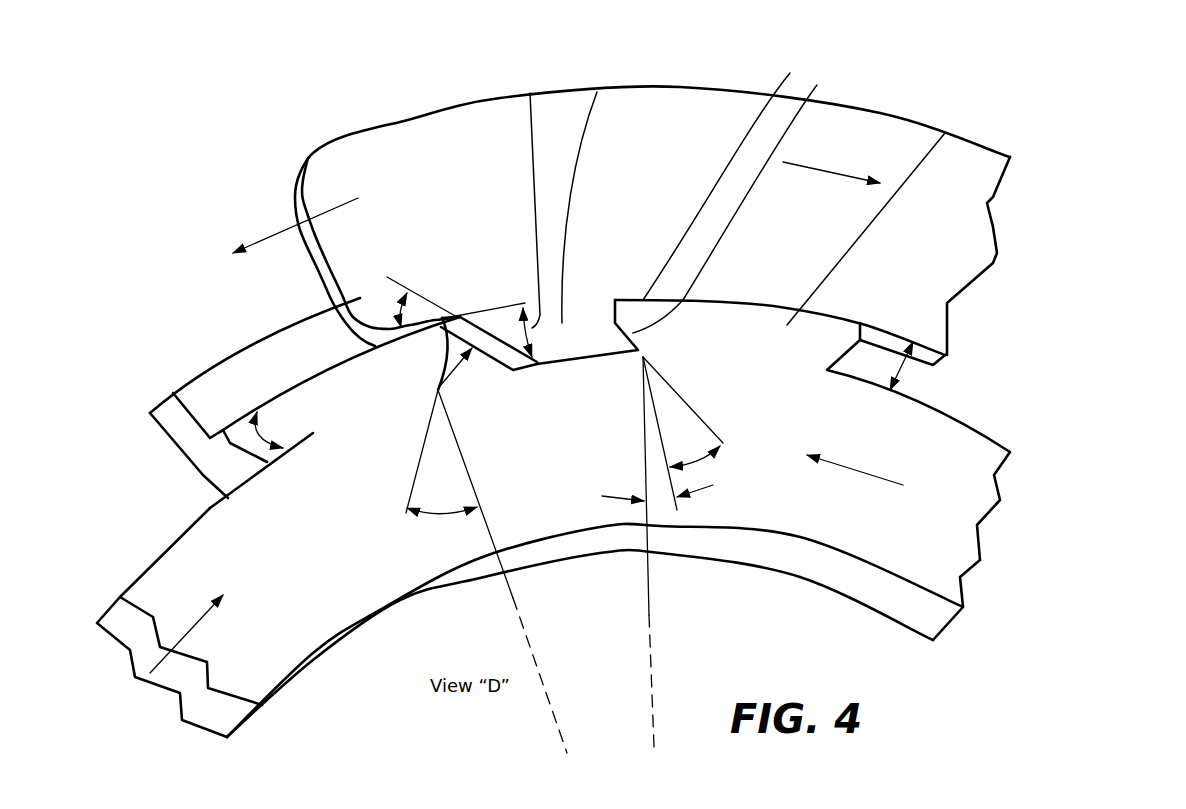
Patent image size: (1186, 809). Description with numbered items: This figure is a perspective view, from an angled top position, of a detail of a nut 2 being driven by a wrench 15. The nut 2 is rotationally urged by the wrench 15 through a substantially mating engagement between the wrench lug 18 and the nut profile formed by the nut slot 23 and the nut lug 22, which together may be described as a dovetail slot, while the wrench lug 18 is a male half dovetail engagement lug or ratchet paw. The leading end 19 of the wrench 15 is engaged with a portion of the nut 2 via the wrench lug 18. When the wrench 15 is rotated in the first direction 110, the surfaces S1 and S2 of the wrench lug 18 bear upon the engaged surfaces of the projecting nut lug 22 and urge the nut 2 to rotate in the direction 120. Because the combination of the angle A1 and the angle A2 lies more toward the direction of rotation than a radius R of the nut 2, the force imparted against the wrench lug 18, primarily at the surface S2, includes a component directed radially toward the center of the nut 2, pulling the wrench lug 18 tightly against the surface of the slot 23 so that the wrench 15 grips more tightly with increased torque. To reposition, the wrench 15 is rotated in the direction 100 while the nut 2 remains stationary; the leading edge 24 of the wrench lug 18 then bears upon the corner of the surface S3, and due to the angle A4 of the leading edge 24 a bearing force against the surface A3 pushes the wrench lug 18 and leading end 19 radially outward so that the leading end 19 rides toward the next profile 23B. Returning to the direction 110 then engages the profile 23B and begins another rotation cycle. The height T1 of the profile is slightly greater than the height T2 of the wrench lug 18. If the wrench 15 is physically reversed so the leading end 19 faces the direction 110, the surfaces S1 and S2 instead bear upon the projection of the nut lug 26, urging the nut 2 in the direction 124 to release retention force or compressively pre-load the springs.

The nut 2 is at (917, 550).
The wrench 15 is at (695, 127).
The wrench lug 18 is at (597, 92).
The leading end 19 is at (430, 180).
The nut lug 22 is at (943, 135).
The nut slot 23 is at (522, 372).
The profile 23B is at (143, 562).
The leading edge 24 is at (438, 390).
The nut lug 26 is at (315, 400).
The direction 100 is at (280, 230).
The first direction 110 is at (835, 170).
The direction 120 is at (190, 632).
The direction 124 is at (857, 472).
The height of the profile T1 is at (190, 380).
The height of the wrench lug T2 is at (530, 93).
The surface S1 is at (735, 182).
The surface S2 is at (746, 203).
The surface S3 is at (435, 344).
The angle A1 is at (628, 500).
The angle A2 is at (713, 485).
The surface A3 is at (450, 513).
The angle of the leading edge A4 is at (400, 327).
The radius R is at (587, 569).